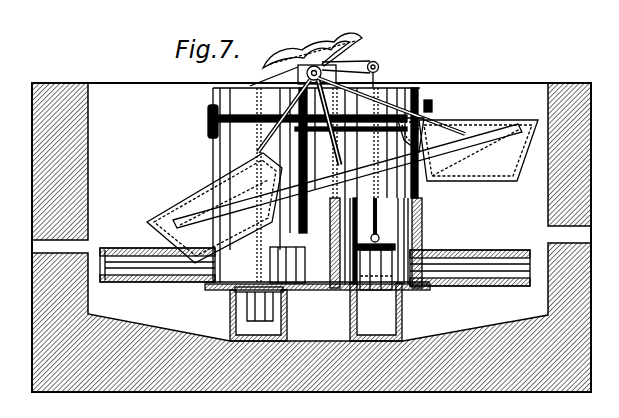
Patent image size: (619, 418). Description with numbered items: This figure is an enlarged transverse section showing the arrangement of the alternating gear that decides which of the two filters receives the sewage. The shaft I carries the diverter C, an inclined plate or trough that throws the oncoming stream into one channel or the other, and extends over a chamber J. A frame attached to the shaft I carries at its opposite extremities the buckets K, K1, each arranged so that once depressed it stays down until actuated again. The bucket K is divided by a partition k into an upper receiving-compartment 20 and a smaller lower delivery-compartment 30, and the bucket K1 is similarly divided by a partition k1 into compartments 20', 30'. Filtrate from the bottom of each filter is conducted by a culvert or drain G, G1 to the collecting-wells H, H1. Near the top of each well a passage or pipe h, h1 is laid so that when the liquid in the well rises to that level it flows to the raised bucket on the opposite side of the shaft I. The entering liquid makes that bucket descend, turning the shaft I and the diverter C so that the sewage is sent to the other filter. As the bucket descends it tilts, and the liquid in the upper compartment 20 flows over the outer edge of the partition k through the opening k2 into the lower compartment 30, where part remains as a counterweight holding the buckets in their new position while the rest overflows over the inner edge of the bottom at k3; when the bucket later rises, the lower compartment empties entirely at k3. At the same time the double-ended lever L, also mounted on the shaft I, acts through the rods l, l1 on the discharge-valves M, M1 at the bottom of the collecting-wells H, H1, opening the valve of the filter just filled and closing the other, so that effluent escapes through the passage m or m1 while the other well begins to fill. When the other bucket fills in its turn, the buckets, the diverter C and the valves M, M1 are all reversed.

The shaft I is at (300, 52).
The diverter C is at (312, 49).
The double-ended lever L is at (373, 61).
The collecting-well H is at (408, 90).
The collecting-well H1 is at (213, 88).
The passage or pipe h is at (203, 130).
The passage or pipe h1 is at (430, 108).
The rod l is at (370, 143).
The rod l1 is at (253, 135).
The upper receiving-compartment 20 is at (416, 99).
The receiving-compartment 20' is at (235, 129).
The lower delivery-compartment 30 is at (355, 176).
The delivery-compartment 30' is at (149, 272).
The bucket K is at (478, 140).
The bucket K1 is at (215, 190).
The partition k is at (489, 150).
The partition k1 is at (308, 183).
The opening k2 is at (530, 122).
The inner edge of the bottom of the lower compartment k3 is at (446, 182).
The chamber J is at (311, 237).
The culvert or drain G is at (470, 260).
The culvert or drain G1 is at (157, 255).
The discharge-valve M is at (375, 244).
The discharge-valve M1 is at (250, 303).
The passage m is at (376, 312).
The passage m1 is at (258, 315).